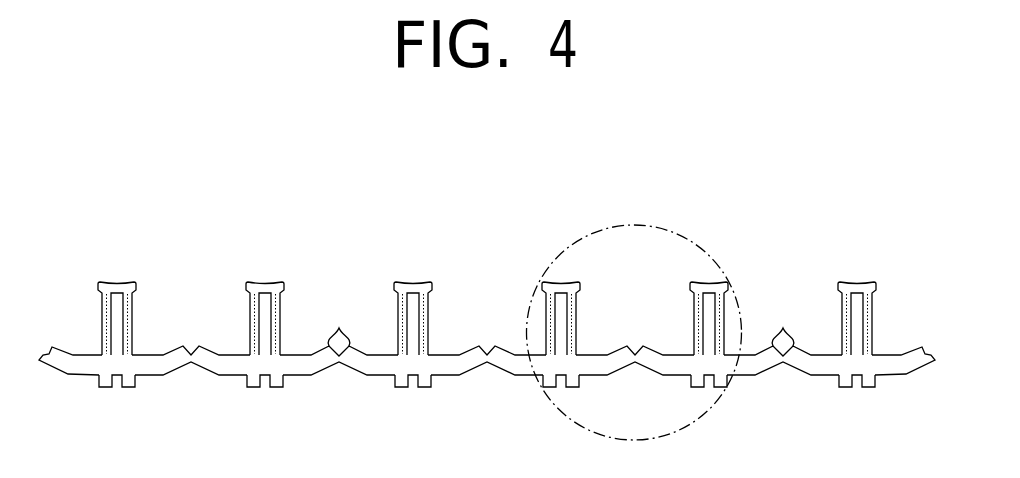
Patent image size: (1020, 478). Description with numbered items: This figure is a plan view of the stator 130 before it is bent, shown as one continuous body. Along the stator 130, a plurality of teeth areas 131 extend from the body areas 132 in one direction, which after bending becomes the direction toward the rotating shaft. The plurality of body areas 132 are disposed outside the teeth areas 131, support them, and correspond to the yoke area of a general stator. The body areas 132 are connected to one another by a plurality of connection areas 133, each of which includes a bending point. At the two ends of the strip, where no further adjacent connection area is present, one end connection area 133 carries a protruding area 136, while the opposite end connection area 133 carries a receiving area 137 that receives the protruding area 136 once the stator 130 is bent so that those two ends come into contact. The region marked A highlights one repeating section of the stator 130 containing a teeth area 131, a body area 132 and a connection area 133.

The stator 130 is at (506, 148).
The teeth areas 131 is at (413, 313).
The body areas 132 is at (386, 370).
The connection areas 133 is at (561, 324).
The protruding area 136 is at (931, 355).
The receiving area 137 is at (43, 355).
The enlarged region A is at (655, 226).